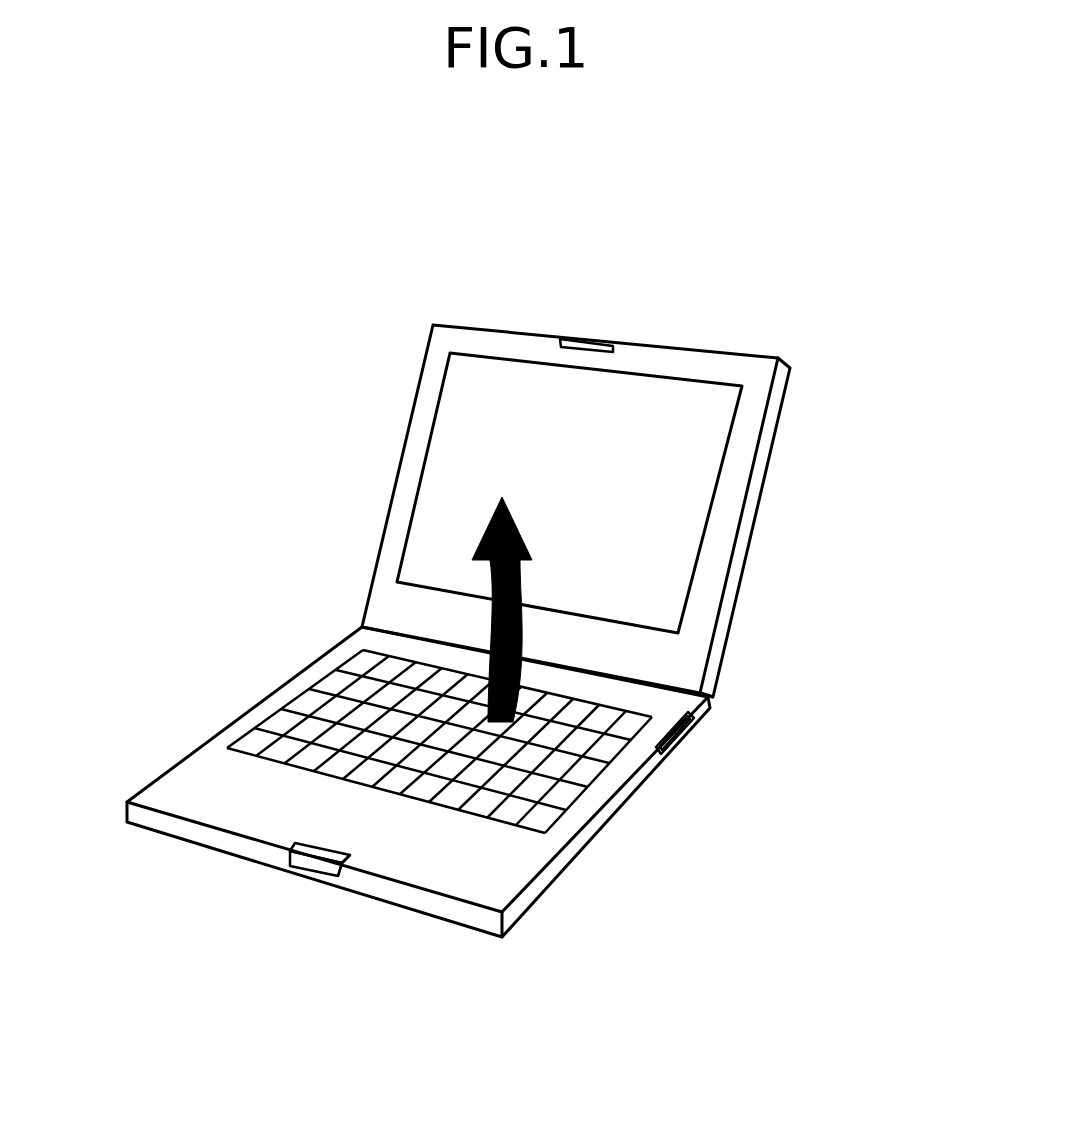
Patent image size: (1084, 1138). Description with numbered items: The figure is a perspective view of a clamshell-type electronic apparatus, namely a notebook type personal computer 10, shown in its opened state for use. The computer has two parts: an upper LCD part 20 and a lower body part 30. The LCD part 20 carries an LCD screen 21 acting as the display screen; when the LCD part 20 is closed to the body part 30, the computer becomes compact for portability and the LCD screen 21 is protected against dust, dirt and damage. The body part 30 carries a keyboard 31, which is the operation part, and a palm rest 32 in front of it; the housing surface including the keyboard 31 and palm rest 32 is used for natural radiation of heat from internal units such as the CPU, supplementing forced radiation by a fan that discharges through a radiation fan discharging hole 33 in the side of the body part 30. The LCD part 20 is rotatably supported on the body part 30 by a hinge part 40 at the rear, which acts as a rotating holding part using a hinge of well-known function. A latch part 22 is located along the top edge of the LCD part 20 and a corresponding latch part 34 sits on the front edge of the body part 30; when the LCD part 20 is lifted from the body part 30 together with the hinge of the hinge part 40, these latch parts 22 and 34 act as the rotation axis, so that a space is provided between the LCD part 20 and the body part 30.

The notebook type personal computer 10 is at (84, 274).
The LCD part 20 is at (864, 381).
The LCD screen 21 is at (687, 510).
The latch part 22 is at (594, 337).
The body part 30 is at (556, 923).
The keyboard 31 is at (353, 672).
The palm rest 32 is at (435, 840).
The radiation fan discharging hole 33 is at (707, 718).
The latch part 34 is at (312, 865).
The hinge part 40 is at (724, 695).